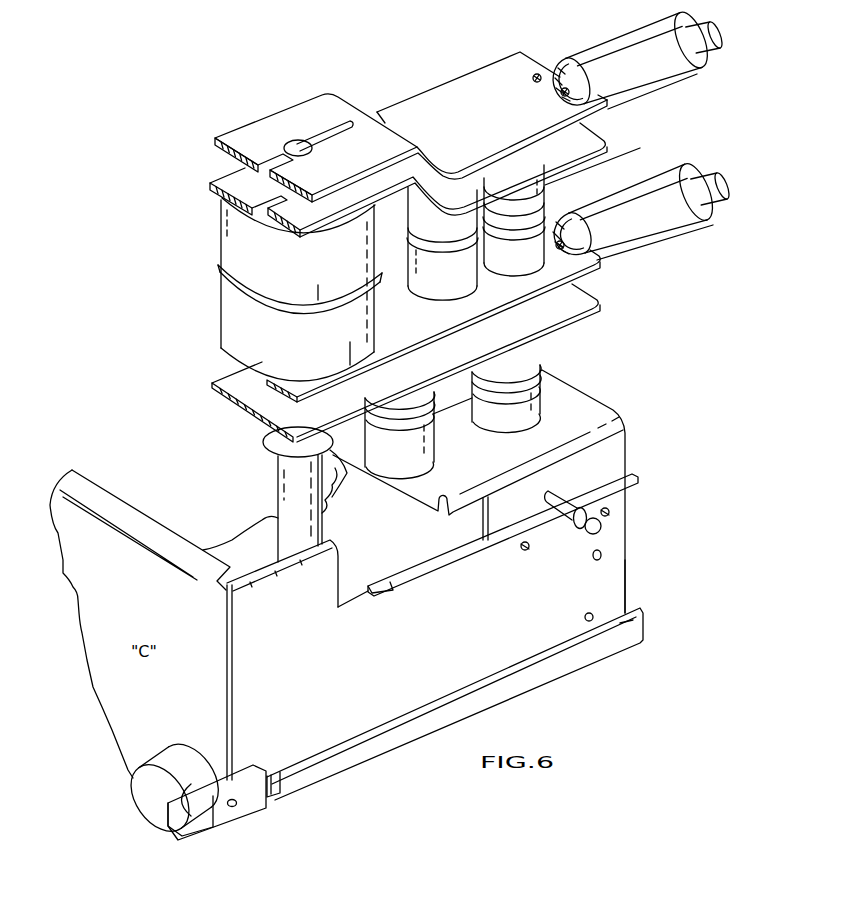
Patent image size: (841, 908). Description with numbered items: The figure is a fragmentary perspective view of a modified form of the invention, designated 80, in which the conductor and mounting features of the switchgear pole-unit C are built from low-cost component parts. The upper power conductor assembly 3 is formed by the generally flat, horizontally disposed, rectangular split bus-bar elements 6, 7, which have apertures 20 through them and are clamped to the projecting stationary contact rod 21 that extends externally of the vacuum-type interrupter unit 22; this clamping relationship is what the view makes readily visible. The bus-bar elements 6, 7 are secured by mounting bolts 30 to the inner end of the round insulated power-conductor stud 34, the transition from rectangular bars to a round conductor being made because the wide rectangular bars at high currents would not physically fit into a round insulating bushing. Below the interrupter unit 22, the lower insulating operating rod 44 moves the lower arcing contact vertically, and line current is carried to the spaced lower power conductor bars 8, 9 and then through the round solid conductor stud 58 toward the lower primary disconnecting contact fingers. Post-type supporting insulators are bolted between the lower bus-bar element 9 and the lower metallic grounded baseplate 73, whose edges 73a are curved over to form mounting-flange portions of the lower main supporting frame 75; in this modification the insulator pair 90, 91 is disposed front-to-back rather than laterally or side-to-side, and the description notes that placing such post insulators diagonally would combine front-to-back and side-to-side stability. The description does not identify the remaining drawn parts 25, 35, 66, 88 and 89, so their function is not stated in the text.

The upper power conductor assembly 3 is at (662, 90).
The upper power conductor bus-bar element 6 is at (255, 126).
The upper power conductor bus-bar element 7 is at (226, 179).
The lower power conductor bar 8 is at (323, 379).
The lower power conductor bus-bar element 9 is at (334, 418).
The apertures 20 is at (313, 150).
The projecting stationary contact rod 21 is at (296, 143).
The vacuum-type interrupter unit 22 is at (237, 252).
The band 25 is at (233, 313).
The mounting bolts 30 is at (559, 93).
The round insulated power-conductor stud 34 is at (720, 47).
The sleeve 35 is at (593, 54).
The lower insulating operating rod 44 is at (290, 481).
The round solid conductor stud 58 is at (718, 195).
The side plate 66 is at (320, 672).
The lower metallic grounded baseplate 73 is at (600, 408).
The curved-over edges 73a is at (507, 517).
The lower main supporting frame 75 is at (625, 572).
The modified form of the invention 80 is at (688, 437).
The cylinder 88 is at (424, 442).
The cylinder 89 is at (538, 400).
The post insulator 90 is at (425, 287).
The post insulator 91 is at (548, 246).